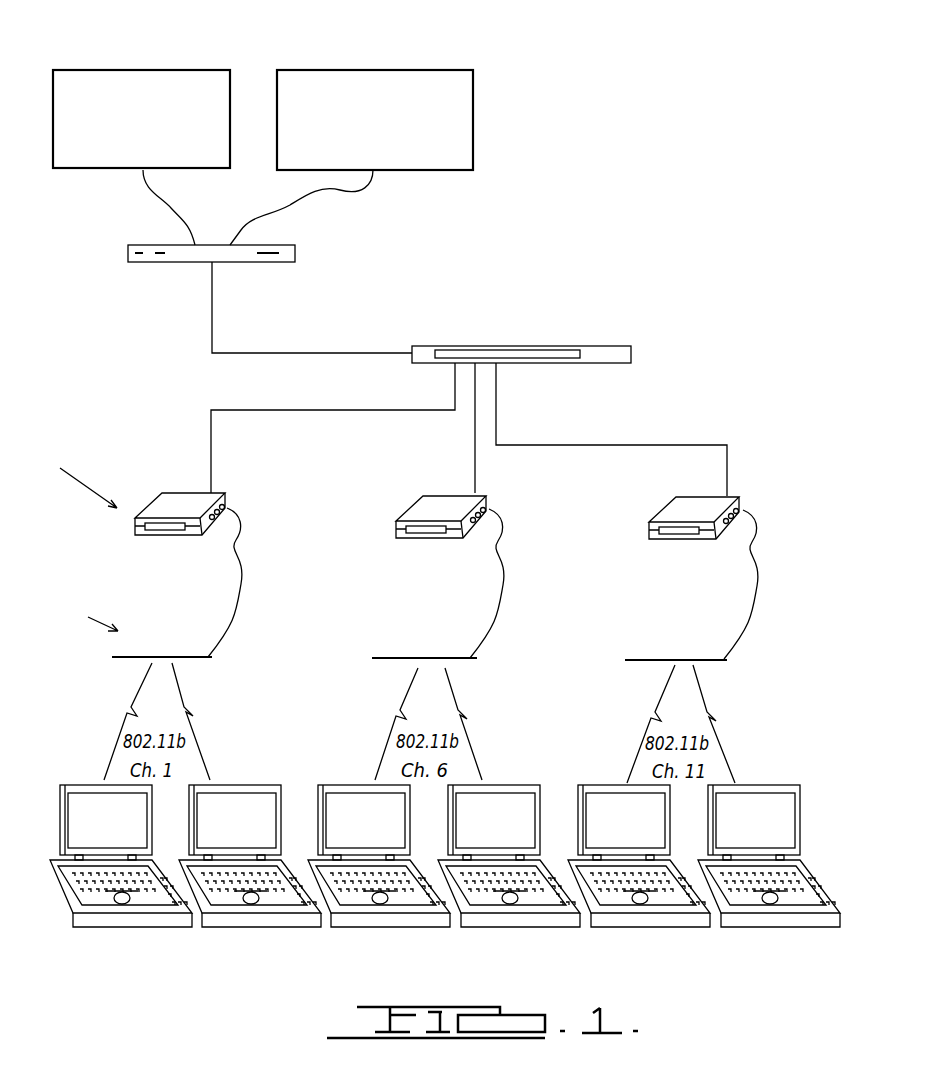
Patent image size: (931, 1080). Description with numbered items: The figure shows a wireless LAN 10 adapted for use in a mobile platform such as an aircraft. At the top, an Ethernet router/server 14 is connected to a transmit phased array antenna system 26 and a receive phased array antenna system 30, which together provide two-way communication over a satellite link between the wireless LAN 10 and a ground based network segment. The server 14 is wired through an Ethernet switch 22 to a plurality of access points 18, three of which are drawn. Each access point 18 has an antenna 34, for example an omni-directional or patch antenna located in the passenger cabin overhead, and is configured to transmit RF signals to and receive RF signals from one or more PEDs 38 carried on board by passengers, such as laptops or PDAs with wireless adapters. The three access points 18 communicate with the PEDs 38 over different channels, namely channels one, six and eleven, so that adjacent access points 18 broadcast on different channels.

The wireless LAN 10 is at (688, 243).
The Ethernet router/server 14 is at (128, 252).
The access point 18 is at (207, 500).
The Ethernet switch 22 is at (598, 346).
The transmit phased array antenna system 26 is at (473, 130).
The receive phased array antenna system 30 is at (108, 70).
The antenna 34 is at (115, 658).
The PED 38 is at (60, 797).